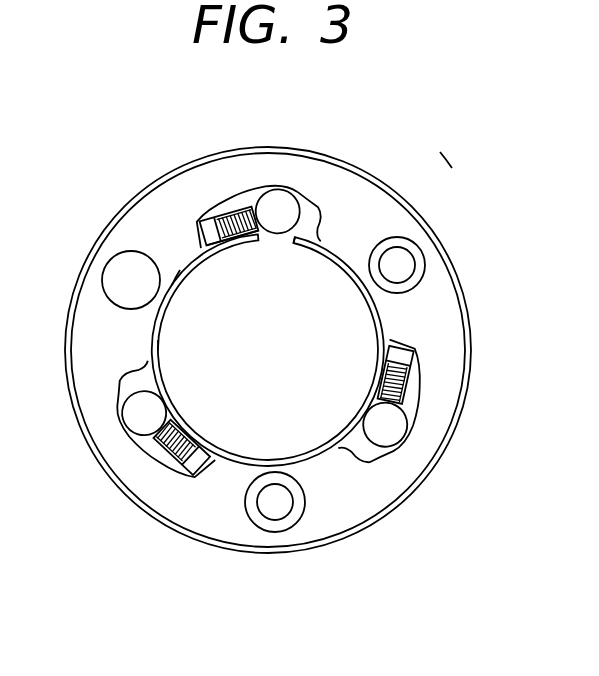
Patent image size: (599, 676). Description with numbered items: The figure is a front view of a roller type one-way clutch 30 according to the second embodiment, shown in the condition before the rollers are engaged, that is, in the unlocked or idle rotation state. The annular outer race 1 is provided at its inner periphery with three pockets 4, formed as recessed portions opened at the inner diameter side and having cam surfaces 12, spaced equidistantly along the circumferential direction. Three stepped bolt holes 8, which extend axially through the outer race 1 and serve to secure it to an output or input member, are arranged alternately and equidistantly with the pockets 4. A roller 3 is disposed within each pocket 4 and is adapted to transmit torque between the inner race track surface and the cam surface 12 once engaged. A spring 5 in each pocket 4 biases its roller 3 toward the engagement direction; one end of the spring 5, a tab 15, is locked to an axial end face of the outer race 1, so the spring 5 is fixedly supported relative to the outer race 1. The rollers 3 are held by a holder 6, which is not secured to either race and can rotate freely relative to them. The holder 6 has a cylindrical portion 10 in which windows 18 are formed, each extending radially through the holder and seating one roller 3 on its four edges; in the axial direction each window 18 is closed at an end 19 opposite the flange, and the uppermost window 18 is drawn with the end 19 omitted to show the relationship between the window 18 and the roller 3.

The outer race 1 is at (142, 212).
The roller 3 is at (283, 203).
The pocket 4 is at (259, 188).
The spring 5 is at (224, 205).
The holder 6 is at (384, 325).
The stepped bolt hole 8 is at (287, 515).
The cylindrical portion 10 is at (180, 280).
The cam surface 12 is at (320, 208).
The tab 15 is at (207, 242).
The window 18 is at (295, 238).
The end 19 is at (157, 344).
The roller type one-way clutch 30 is at (393, 155).